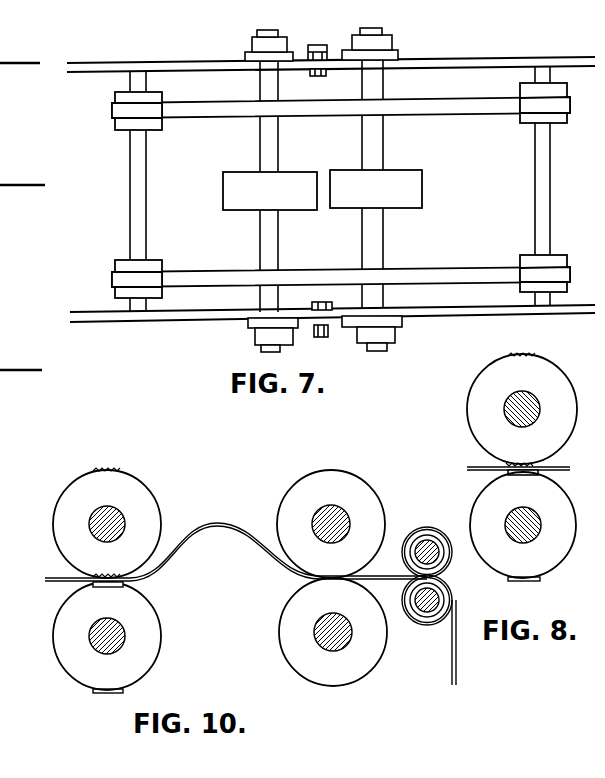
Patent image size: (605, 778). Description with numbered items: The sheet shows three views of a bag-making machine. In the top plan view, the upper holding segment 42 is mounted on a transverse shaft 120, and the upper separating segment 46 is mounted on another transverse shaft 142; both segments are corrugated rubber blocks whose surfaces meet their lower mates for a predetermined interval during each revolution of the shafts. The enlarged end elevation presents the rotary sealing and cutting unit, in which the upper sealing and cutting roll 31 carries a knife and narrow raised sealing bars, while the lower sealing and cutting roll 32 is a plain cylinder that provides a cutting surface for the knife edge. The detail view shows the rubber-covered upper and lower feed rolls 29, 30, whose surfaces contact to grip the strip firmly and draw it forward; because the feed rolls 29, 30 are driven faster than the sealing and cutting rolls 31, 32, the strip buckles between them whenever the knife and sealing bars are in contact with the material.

In FIG. 7, the shaft 142 is at (260, 148).
In FIG. 7, the shaft 120 is at (383, 153).
In FIG. 7, the upper holding segment 42 is at (422, 198).
In FIG. 7, the upper separating segment 46 is at (240, 211).
In FIG. 8, the upper sealing and cutting roll 31 is at (550, 370).
In FIG. 10, the upper sealing and cutting roll 31 is at (145, 498).
In FIG. 8, the lower sealing and cutting roll 32 is at (565, 520).
In FIG. 10, the lower sealing and cutting roll 32 is at (150, 630).
In FIG. 10, the upper feed roll 29 is at (353, 484).
In FIG. 10, the lower feed roll 30 is at (290, 607).